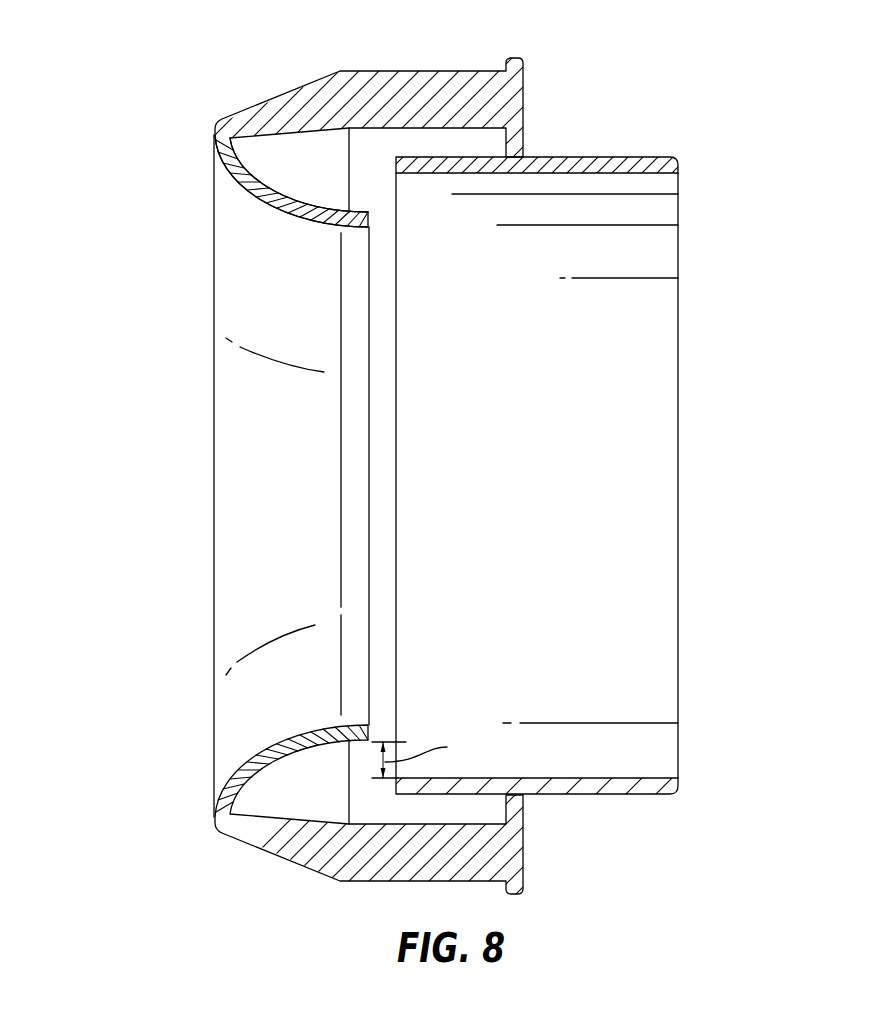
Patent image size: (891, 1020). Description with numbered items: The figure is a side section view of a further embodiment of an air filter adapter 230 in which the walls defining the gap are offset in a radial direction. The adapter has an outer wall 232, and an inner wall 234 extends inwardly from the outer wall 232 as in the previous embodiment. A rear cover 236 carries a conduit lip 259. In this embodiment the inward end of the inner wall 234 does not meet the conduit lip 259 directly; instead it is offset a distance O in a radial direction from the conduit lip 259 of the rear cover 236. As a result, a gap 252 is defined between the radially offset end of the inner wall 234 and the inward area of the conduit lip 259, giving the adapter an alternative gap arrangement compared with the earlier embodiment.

The air filter adapter 230 is at (696, 78).
The outer wall 232 is at (230, 110).
The inner wall 234 is at (272, 224).
The rear cover 236 is at (706, 174).
The gap 252 is at (380, 205).
The conduit lip 259 is at (598, 485).